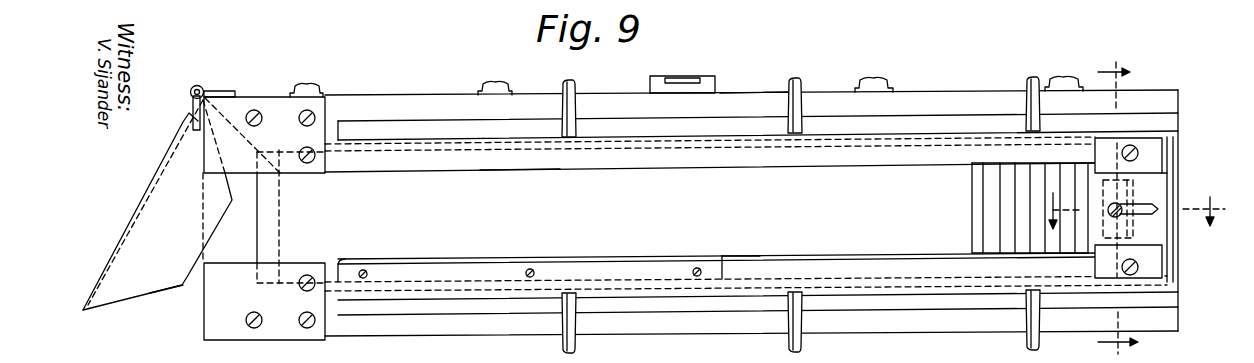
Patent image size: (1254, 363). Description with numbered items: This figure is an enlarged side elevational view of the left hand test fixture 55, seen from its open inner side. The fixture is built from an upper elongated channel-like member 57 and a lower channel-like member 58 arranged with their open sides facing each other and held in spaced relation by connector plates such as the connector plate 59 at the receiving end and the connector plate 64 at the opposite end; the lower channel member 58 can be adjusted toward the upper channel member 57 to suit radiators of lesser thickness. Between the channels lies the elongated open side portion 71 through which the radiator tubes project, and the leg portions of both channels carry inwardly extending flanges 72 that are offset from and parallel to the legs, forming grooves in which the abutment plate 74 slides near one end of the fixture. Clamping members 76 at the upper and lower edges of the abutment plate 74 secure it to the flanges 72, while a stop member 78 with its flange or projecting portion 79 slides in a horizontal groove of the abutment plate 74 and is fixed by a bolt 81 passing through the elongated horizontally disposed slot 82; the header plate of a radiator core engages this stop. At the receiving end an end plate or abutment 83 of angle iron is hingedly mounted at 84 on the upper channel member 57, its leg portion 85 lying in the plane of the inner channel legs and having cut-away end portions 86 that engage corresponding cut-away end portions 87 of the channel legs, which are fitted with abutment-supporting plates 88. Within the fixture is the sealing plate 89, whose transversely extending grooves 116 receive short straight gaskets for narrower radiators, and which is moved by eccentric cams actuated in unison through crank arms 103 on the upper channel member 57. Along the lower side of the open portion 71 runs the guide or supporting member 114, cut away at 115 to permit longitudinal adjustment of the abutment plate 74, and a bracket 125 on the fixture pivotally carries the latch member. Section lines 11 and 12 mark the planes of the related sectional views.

The test fixture 55 is at (750, 84).
The upper channel-like member 57 is at (398, 94).
The lower channel-like member 58 is at (440, 336).
The connector plate 59 is at (236, 254).
The connector plate 64 is at (1173, 245).
The elongated open side portion 71 is at (630, 172).
The inwardly extending flange 72 is at (760, 144).
The abutment plate 74 is at (1158, 177).
The clamping member 76 is at (1157, 155).
The stop member 78 is at (1105, 232).
The flange or projecting portion 79 is at (1135, 200).
The bolt 81 is at (1120, 214).
The elongated horizontally disposed slot 82 is at (1152, 207).
The end plate or abutment 83 is at (146, 204).
The pivotal mounting 84 is at (202, 88).
The leg portion 85 is at (170, 266).
The cut-away end portion 86 is at (178, 150).
The cut-away end portion 87 is at (257, 153).
The abutment-supporting plate 88 is at (208, 166).
The sealing plate 89 is at (512, 182).
The crank arm 103 is at (316, 84).
The guide or supporting member 114 is at (508, 259).
The cut-away portion of guide 115 is at (724, 264).
The transversely extending grooves 116 is at (1035, 235).
The bracket 125 is at (650, 86).
The section line 11 is at (1118, 206).
The section line 12 is at (1140, 203).